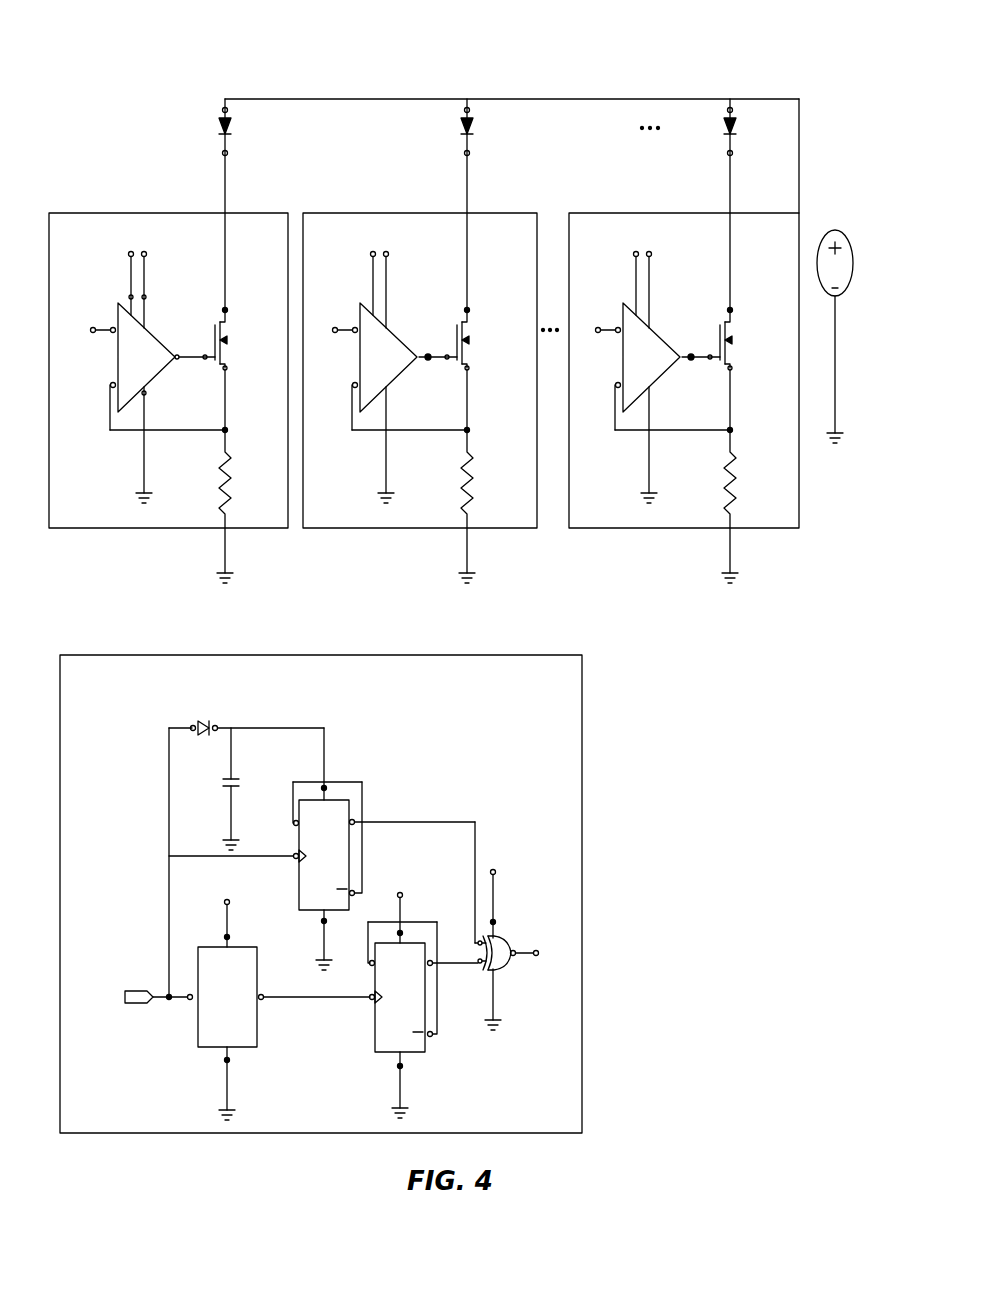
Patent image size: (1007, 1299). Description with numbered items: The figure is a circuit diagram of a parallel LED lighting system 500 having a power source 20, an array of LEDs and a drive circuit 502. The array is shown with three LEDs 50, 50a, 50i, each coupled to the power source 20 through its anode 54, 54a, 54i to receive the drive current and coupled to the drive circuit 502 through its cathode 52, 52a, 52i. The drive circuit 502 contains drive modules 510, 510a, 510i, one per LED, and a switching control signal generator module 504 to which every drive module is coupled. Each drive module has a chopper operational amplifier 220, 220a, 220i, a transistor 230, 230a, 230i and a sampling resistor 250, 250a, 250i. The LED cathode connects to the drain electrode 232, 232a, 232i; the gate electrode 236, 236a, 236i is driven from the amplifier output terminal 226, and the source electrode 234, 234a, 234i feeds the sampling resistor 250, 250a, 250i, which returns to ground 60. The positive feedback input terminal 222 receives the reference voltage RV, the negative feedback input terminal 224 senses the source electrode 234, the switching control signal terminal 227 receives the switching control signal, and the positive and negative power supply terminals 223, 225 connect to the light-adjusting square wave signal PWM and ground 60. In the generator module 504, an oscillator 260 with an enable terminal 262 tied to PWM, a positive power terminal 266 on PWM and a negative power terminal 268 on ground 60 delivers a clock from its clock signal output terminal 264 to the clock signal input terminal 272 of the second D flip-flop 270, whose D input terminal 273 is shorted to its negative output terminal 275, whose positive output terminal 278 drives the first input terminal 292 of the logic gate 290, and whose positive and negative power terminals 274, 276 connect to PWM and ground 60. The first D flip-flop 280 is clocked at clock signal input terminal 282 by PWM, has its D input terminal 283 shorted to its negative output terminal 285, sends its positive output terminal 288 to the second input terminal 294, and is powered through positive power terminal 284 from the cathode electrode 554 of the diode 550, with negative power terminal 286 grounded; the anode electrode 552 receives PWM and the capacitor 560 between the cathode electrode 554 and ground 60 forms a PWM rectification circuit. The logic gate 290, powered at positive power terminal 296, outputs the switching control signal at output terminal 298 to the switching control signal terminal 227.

The LED lighting system 500 is at (458, 42).
The drive circuit 502 is at (128, 148).
The switching control signal generator module 504 is at (320, 656).
The drive module 510 is at (118, 212).
The drive module 510a is at (393, 212).
The drive module 510i is at (658, 212).
The anode 54 is at (228, 110).
The anode 54a is at (470, 110).
The anode 54i is at (733, 110).
The LED 50 is at (240, 128).
The LED 50a is at (482, 128).
The LED 50i is at (750, 127).
The cathode 52 is at (228, 153).
The cathode 52a is at (470, 153).
The cathode 52i is at (733, 153).
The power source 20 is at (851, 224).
The ground 60 is at (227, 548).
The chopper operational amplifier 220 is at (97, 390).
The chopper operational amplifier 220a is at (339, 390).
The chopper operational amplifier 220i is at (605, 390).
The positive feedback input terminal 222 is at (112, 327).
The positive power supply terminal 223 is at (146, 297).
The negative feedback input terminal 224 is at (112, 383).
The negative power supply terminal 225 is at (147, 396).
The output terminal 226 is at (176, 354).
The switching control signal terminal 227 is at (129, 296).
The transistor 230 is at (237, 333).
The transistor 230a is at (479, 333).
The transistor 230i is at (742, 333).
The drain electrode 232 is at (227, 308).
The drain electrode 232a is at (469, 308).
The drain electrode 232i is at (732, 308).
The source electrode 234 is at (228, 370).
The source electrode 234a is at (470, 370).
The source electrode 234i is at (733, 370).
The gate electrode 236 is at (205, 360).
The gate electrode 236a is at (445, 356).
The gate electrode 236i is at (708, 356).
The sampling resistor 250 is at (241, 478).
The sampling resistor 250a is at (483, 478).
The sampling resistor 250i is at (746, 478).
The diode 550 is at (204, 695).
The anode electrode 552 is at (190, 725).
The cathode electrode 554 is at (217, 726).
The capacitor 560 is at (248, 770).
The first D flip-flop 280 is at (362, 768).
The clock signal input terminal 282 is at (294, 858).
The D input terminal 283 is at (295, 826).
The positive power terminal 284 is at (328, 790).
The negative output terminal 285 is at (363, 890).
The negative power terminal 286 is at (326, 921).
The positive output terminal 288 is at (355, 824).
The oscillator 260 is at (185, 1052).
The enable terminal 262 is at (188, 994).
The clock signal output terminal 264 is at (263, 993).
The positive power terminal 266 is at (229, 940).
The negative power terminal 268 is at (229, 1060).
The second D flip-flop 270 is at (364, 1054).
The clock signal input terminal 272 is at (370, 999).
The D input terminal 273 is at (370, 966).
The positive power terminal 274 is at (396, 931).
The negative output terminal 275 is at (432, 1037).
The negative power terminal 276 is at (403, 1066).
The positive output terminal 278 is at (438, 940).
The logic gate 290 is at (508, 992).
The first input terminal 292 is at (478, 966).
The second input terminal 294 is at (483, 938).
The positive power terminal 296 is at (496, 922).
The output terminal 298 is at (516, 957).